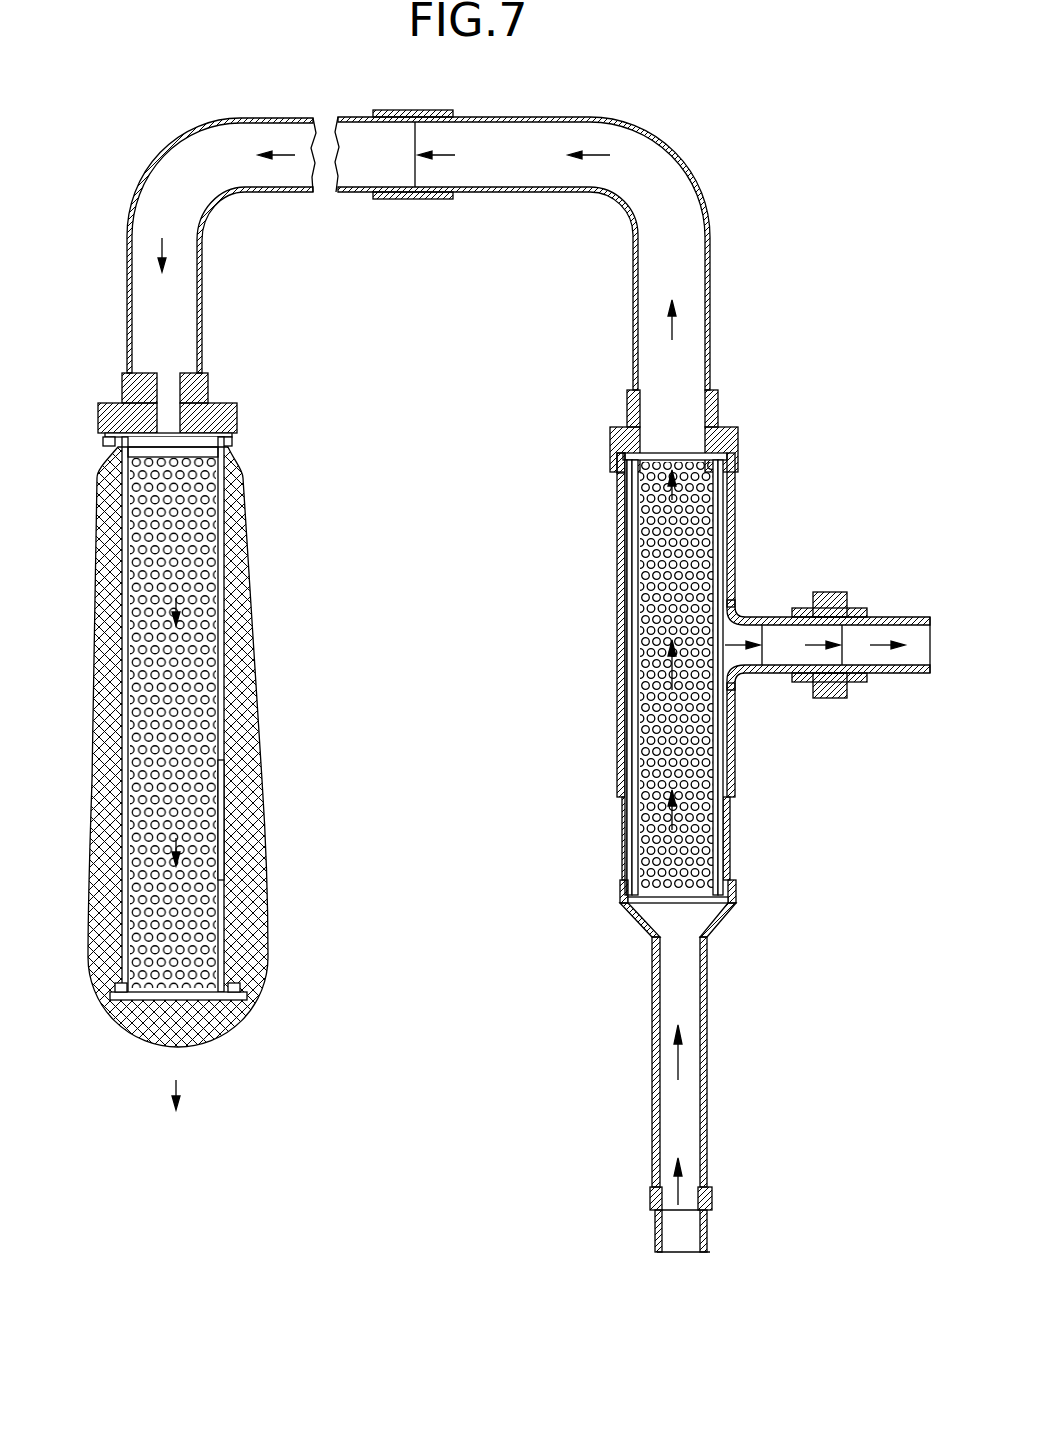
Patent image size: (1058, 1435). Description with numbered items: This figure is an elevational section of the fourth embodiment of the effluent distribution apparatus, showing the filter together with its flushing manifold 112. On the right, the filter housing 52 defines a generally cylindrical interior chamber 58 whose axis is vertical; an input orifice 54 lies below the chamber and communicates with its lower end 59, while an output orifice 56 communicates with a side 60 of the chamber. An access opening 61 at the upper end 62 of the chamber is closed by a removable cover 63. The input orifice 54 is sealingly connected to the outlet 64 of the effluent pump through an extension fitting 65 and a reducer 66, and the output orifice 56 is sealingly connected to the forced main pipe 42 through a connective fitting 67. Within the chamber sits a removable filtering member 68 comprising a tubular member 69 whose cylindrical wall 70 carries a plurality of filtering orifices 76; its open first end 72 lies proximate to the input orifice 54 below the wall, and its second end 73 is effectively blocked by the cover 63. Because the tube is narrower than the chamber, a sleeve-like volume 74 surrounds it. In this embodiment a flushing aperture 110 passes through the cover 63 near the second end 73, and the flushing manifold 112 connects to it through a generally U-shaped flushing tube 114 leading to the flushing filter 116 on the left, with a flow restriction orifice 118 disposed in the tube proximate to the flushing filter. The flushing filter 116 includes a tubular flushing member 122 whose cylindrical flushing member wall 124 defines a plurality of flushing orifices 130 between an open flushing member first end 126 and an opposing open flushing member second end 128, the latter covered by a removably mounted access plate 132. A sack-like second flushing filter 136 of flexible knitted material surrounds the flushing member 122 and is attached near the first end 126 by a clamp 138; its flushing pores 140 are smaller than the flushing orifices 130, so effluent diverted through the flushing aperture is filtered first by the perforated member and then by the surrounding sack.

The main pipe 42 is at (908, 617).
The filter housing 52 is at (735, 556).
The input orifice 54 is at (710, 915).
The output orifice 56 is at (745, 668).
The interior chamber 58 is at (735, 708).
The lower end 59 is at (622, 893).
The side 60 is at (745, 612).
The access opening 61 is at (738, 460).
The upper end 62 is at (625, 460).
The removable cover 63 is at (612, 440).
The outlet 64 is at (712, 1236).
The extension fitting 65 is at (707, 1072).
The reducer 66 is at (640, 920).
The connective fitting 67 is at (842, 592).
The filtering member 68 is at (635, 660).
The tubular member 69 is at (722, 752).
The cylindrical wall 70 is at (632, 700).
The first end 72 is at (690, 900).
The second end 73 is at (700, 455).
The sleeve-like volume 74 is at (627, 624).
The filtering orifices 76 is at (645, 628).
The flushing aperture 110 is at (698, 442).
The flushing manifold 112 is at (525, 194).
The flushing tube 114 is at (365, 198).
The flushing filter 116 is at (360, 398).
The flow restriction orifice 118 is at (175, 373).
The flushing member 122 is at (218, 533).
The flushing member wall 124 is at (224, 802).
The flushing member first end 126 is at (213, 472).
The flushing member second end 128 is at (232, 984).
The flushing orifices 130 is at (212, 617).
The access plate 132 is at (215, 992).
The second flushing filter 136 is at (272, 917).
The clamp 138 is at (118, 450).
The flushing pores 140 is at (250, 874).